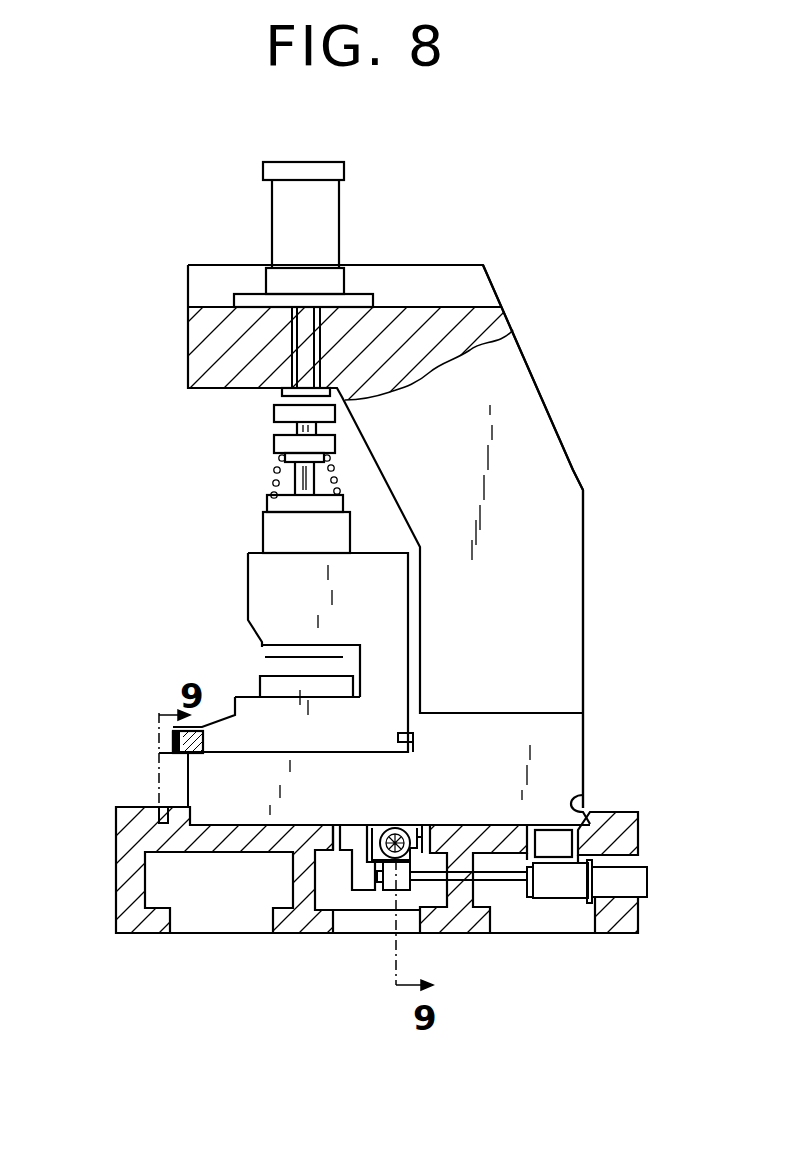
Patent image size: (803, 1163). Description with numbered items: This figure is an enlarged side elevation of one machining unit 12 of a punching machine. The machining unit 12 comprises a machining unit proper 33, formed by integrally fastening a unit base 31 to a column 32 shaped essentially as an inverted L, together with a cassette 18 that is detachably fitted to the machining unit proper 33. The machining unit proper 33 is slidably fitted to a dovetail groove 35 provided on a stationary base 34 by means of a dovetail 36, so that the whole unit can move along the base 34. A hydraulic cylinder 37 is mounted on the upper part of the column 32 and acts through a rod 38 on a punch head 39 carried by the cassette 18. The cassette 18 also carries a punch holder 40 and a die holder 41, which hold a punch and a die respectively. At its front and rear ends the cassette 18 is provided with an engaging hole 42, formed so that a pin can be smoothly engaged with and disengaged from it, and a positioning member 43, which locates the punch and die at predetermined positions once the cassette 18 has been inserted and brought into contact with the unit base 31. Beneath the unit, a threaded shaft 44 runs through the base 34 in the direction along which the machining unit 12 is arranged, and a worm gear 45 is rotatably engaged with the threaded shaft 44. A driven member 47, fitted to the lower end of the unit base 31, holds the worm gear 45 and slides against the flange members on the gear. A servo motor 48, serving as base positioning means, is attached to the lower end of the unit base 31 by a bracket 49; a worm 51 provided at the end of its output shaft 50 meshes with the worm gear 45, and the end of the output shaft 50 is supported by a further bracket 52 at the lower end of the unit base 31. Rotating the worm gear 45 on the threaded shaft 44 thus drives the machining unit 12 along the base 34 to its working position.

The machining unit 12 is at (483, 240).
The cassette 18 is at (263, 585).
The unit base 31 is at (570, 732).
The column 32 is at (520, 390).
The machining unit proper 33 is at (553, 480).
The base 34 is at (116, 812).
The dovetail groove 35 is at (583, 790).
The dovetail 36 is at (607, 808).
The hydraulic cylinder 37 is at (327, 217).
The rod 38 is at (302, 343).
The punch head 39 is at (275, 417).
The punch holder 40 is at (273, 650).
The die holder 41 is at (268, 685).
The engaging hole 42 is at (173, 740).
The positioning member 43 is at (413, 737).
The threaded shaft 44 is at (417, 823).
The worm gear 45 is at (390, 826).
The driven member 47 is at (373, 826).
The servo motor 48 is at (568, 890).
The bracket 49 is at (555, 890).
The output shaft 50 is at (498, 882).
The worm 51 is at (387, 897).
The bracket 52 is at (362, 893).